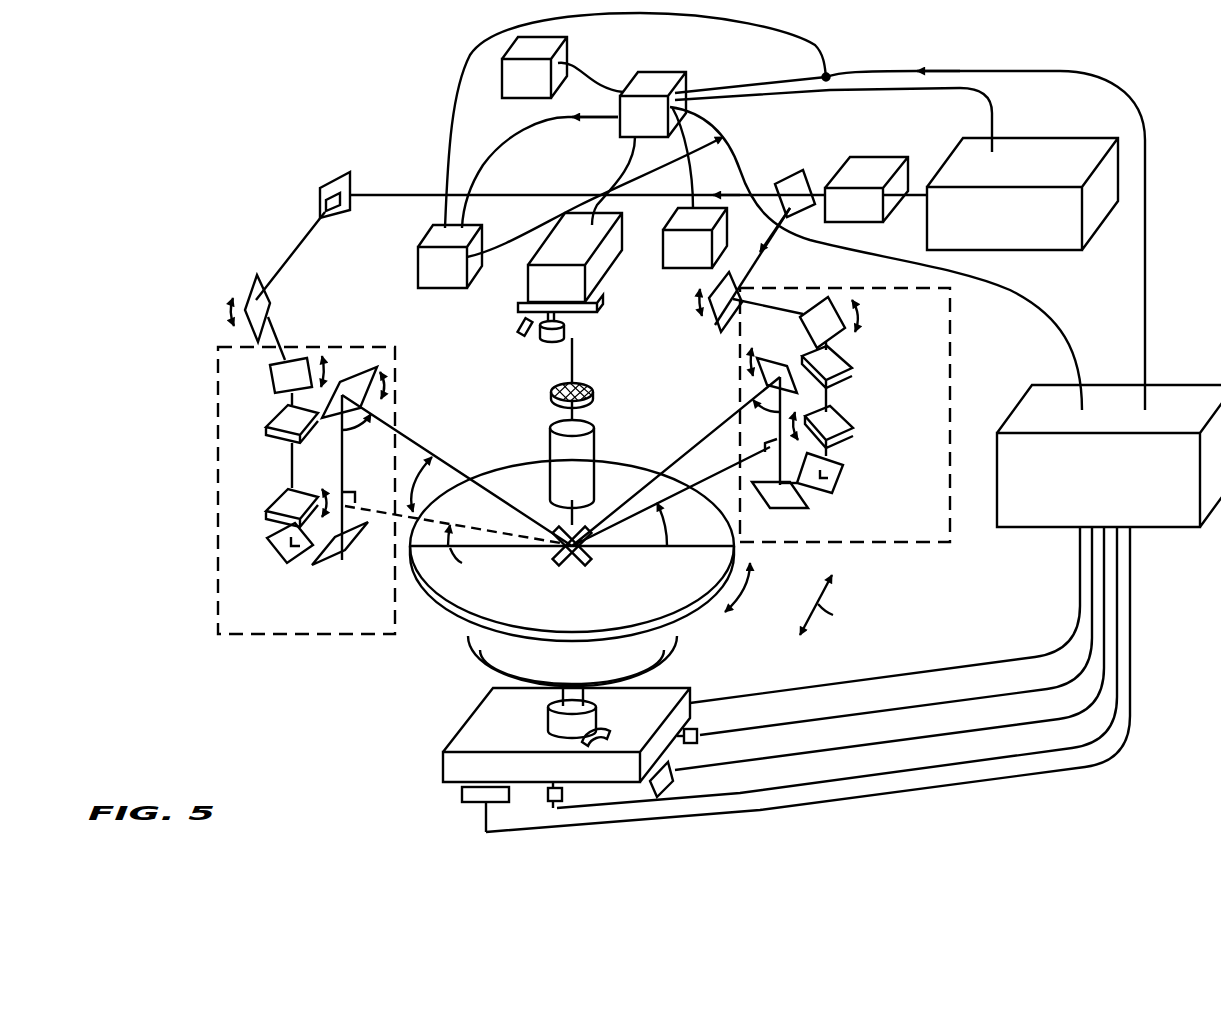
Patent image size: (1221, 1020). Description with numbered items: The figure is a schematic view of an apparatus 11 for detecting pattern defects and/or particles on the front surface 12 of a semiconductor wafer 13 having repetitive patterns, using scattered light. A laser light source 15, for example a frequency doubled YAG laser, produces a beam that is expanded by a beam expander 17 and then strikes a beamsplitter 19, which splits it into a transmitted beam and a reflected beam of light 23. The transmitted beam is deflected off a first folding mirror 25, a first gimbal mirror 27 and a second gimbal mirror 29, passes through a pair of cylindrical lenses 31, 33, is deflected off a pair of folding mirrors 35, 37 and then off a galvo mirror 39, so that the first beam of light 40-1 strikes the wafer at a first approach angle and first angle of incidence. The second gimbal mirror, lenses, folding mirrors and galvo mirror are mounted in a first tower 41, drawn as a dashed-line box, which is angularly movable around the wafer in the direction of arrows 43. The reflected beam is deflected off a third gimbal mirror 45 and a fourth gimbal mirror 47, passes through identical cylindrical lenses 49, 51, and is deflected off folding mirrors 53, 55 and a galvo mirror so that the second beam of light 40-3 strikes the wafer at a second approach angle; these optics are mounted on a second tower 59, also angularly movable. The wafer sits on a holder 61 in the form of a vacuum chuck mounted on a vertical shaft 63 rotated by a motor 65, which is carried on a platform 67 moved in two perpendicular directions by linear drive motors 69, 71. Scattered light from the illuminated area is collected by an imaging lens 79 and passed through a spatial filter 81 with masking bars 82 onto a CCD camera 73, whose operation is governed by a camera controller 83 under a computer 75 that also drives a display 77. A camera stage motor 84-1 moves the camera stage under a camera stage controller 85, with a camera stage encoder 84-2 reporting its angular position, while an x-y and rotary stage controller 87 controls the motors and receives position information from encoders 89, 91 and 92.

The apparatus 11 is at (883, 600).
The front surface 12 is at (572, 550).
The semiconductor wafer 13 is at (440, 613).
The laser light source 15 is at (1022, 194).
The beam expander 17 is at (866, 189).
The beamsplitter 19 is at (797, 172).
The reflected beam of light 23 is at (748, 276).
The first folding mirror 25 is at (342, 180).
The first gimbal mirror 27 is at (268, 300).
The second gimbal mirror 29 is at (270, 377).
The cylindrical lens 31 is at (268, 420).
The cylindrical lens 33 is at (267, 500).
The folding mirror 35 is at (267, 548).
The folding mirror 37 is at (343, 548).
The galvo mirror 39 is at (355, 370).
The first beam of light 40-1 is at (430, 462).
The second beam of light 40-3 is at (705, 440).
The first tower 41 is at (285, 636).
The arrows 43 is at (437, 503).
The third gimbal mirror 45 is at (722, 325).
The fourth gimbal mirror 47 is at (840, 325).
The cylindrical lens 49 is at (845, 365).
The cylindrical lens 51 is at (845, 420).
The folding mirror 53 is at (848, 470).
The folding mirror 55 is at (790, 505).
The second tower 59 is at (765, 368).
The holder 61 is at (472, 652).
The vertical shaft 63 is at (562, 693).
The motor 65 is at (548, 718).
The platform (stage) 67 is at (566, 735).
The linear drive motor 69 is at (700, 734).
The linear drive motor 71 is at (565, 795).
The CCD camera 73 is at (570, 262).
The computer 75 is at (653, 104).
The display 77 is at (534, 67).
The imaging lens 79 is at (553, 452).
The spatial filter 81 is at (520, 310).
The masking bars 82 is at (556, 394).
The camera controller 83 is at (450, 256).
The camera stage motor 84-1 is at (565, 334).
The camera stage encoder 84-2 is at (522, 335).
The camera stage controller 85 is at (695, 238).
The x-y and rotary stage controller 87 is at (1172, 527).
The encoder 89 is at (678, 782).
The encoder 91 is at (462, 792).
The encoder 92 is at (584, 733).